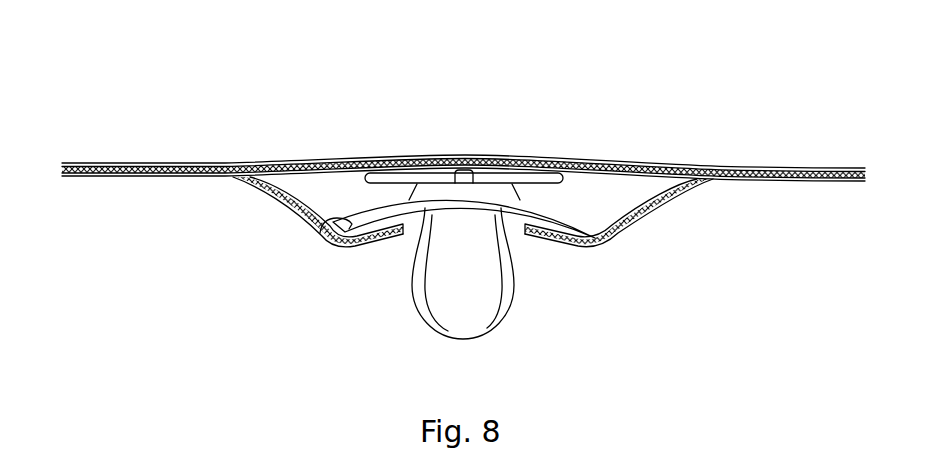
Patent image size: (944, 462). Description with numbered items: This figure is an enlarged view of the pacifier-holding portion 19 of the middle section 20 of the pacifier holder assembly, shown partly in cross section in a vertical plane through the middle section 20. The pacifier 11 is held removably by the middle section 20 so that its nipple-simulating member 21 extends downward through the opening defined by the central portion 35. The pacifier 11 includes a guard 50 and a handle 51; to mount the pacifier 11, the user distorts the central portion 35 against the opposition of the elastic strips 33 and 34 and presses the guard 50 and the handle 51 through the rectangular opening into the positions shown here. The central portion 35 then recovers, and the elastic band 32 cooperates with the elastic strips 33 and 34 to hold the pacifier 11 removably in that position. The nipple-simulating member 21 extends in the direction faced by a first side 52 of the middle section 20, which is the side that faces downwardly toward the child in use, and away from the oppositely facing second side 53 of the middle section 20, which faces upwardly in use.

The pacifier 11 is at (421, 240).
The pacifier-holding portion 19 is at (508, 160).
The middle section 20 is at (464, 188).
The nipple-simulating member 21 is at (447, 312).
The elastic band 32 is at (780, 172).
The elastic strip 33 is at (647, 200).
The elastic strip 34 is at (280, 205).
The central portion 35 is at (620, 232).
The guard 50 is at (330, 226).
The handle 51 is at (432, 177).
The first side 52 is at (633, 312).
The second side 53 is at (633, 107).